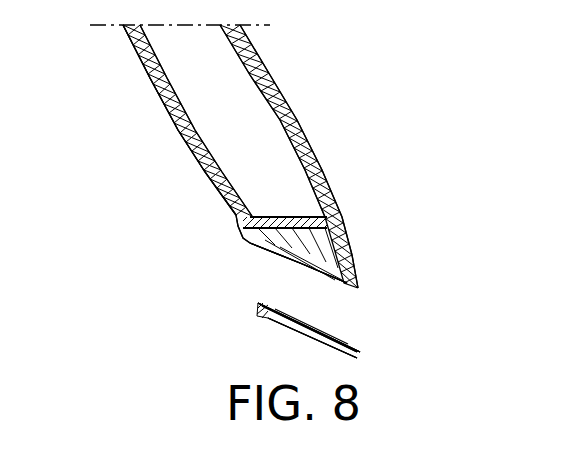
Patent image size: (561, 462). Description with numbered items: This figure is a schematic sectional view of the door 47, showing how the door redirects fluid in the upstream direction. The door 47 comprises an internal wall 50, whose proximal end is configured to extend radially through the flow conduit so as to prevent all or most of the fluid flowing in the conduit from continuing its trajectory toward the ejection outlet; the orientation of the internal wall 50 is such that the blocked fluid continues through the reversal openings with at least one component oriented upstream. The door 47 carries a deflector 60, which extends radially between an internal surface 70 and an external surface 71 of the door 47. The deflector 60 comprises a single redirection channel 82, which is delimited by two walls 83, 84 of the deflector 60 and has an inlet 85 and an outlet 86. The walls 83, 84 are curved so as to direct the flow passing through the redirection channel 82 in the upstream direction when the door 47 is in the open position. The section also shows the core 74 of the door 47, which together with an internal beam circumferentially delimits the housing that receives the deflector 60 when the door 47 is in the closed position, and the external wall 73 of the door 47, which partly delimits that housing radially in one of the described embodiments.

The door 47 is at (129, 92).
The internal wall 50 is at (136, 50).
The deflector 60 is at (113, 237).
The internal surface 70 is at (185, 132).
The external surface 71 is at (298, 118).
The external wall 73 is at (257, 53).
The core 74 is at (232, 121).
The redirection channel 82 is at (305, 297).
The wall 83 is at (245, 253).
The wall 84 is at (262, 318).
The inlet 85 is at (267, 271).
The outlet 86 is at (352, 308).